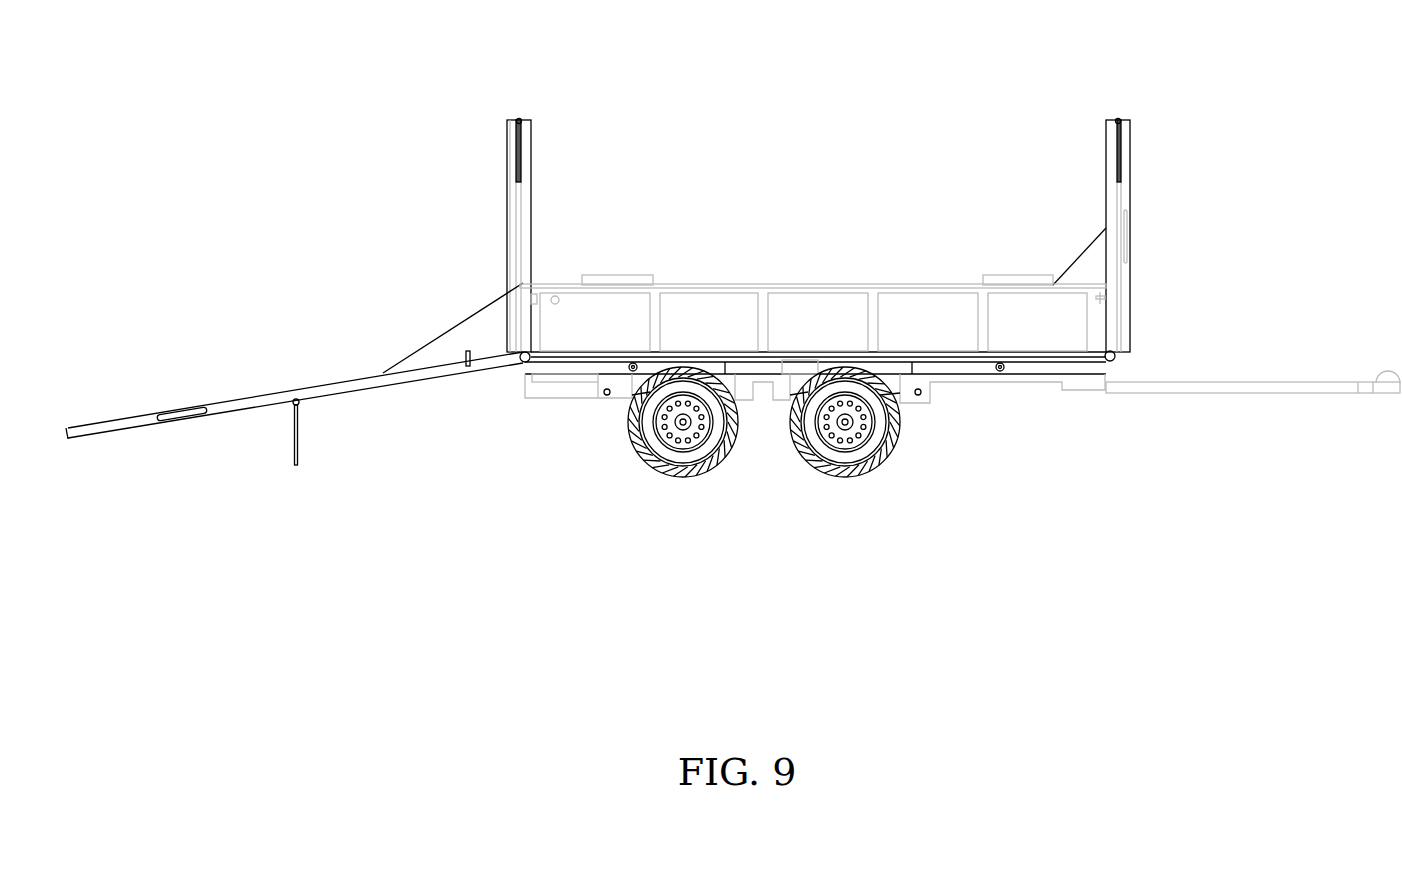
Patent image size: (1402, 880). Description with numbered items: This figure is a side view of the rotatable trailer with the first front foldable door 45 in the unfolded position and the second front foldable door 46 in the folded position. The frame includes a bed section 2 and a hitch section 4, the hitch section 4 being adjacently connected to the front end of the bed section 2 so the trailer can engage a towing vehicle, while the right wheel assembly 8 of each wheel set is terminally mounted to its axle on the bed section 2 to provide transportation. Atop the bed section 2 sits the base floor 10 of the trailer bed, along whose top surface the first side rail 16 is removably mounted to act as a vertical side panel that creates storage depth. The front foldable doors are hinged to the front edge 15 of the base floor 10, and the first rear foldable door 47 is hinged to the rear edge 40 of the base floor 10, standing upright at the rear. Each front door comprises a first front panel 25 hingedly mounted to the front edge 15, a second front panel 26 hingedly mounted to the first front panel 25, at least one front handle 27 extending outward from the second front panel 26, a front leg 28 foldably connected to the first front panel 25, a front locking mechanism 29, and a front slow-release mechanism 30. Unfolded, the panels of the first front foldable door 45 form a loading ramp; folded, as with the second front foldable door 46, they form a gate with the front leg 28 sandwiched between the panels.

The bed section 2 is at (975, 376).
The hitch section 4 is at (1262, 382).
The right wheel assembly 8 is at (680, 476).
The base floor 10 is at (700, 355).
The front edge 15 is at (531, 361).
The first side rail 16 is at (835, 293).
The first front panel 25 is at (531, 160).
The second front panel 26 is at (508, 145).
The front handle 27 is at (175, 422).
The front leg 28 is at (513, 119).
The front locking mechanism 29 is at (468, 351).
The front slow-release mechanism 30 is at (622, 283).
The rear edge 40 is at (1119, 364).
The first front foldable door 45 is at (304, 304).
The second front foldable door 46 is at (578, 126).
The first rear foldable door 47 is at (1144, 171).